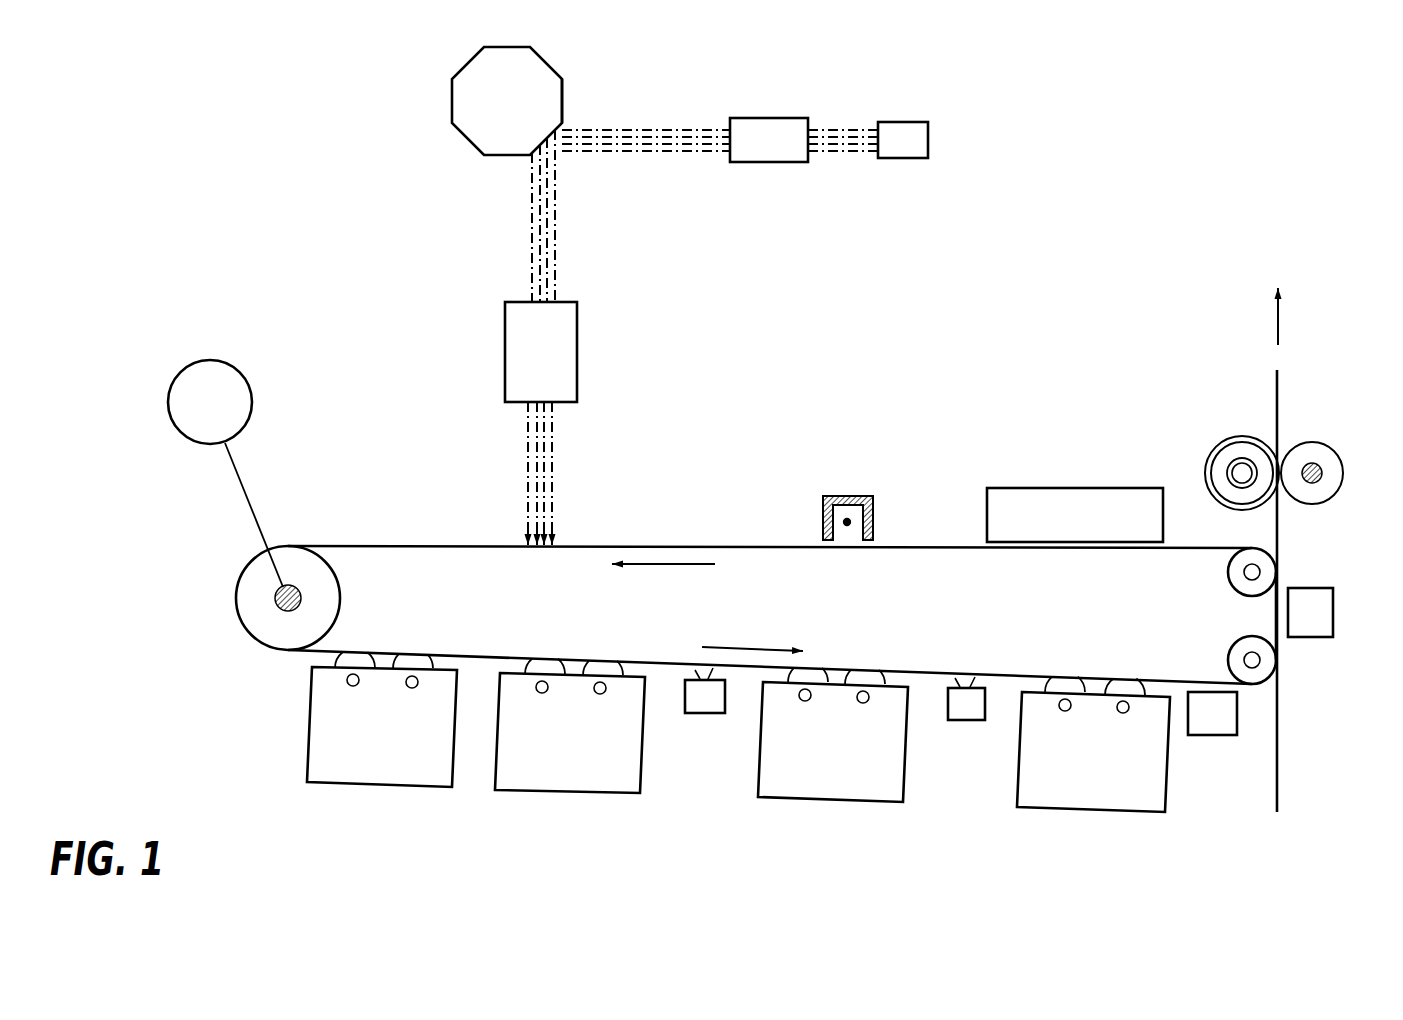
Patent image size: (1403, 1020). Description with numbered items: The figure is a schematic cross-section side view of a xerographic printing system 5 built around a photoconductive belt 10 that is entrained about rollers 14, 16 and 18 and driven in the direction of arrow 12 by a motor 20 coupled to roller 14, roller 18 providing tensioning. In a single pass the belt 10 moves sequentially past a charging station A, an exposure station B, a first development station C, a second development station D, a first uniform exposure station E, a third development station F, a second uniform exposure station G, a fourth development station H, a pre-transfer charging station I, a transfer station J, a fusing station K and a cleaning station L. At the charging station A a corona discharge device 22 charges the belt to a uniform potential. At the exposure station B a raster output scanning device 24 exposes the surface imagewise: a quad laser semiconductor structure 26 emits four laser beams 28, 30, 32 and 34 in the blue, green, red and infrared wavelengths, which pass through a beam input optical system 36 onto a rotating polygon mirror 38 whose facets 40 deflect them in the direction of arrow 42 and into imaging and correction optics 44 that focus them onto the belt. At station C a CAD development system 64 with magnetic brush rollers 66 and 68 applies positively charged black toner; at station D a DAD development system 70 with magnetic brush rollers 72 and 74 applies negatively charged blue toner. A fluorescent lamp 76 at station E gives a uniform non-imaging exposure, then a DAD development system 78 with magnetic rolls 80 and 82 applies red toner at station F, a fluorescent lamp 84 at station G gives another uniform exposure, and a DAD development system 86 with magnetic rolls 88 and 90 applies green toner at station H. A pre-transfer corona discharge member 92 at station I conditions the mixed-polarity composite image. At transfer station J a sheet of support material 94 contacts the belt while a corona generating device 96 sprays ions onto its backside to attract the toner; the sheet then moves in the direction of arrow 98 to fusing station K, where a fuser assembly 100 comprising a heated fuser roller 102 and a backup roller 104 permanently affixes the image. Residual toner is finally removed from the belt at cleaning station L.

The xerographic printing system 5 is at (245, 226).
The photoconductive belt 10 is at (487, 650).
The arrow 12 is at (673, 568).
The roller 14 is at (305, 558).
The roller 16 is at (1240, 655).
The roller 18 is at (1230, 575).
The motor 20 is at (212, 375).
The corona discharge device 22 is at (865, 497).
The raster output scanning device 24 is at (933, 88).
The quad laser semiconductor structure 26 is at (912, 138).
The laser beam 28 is at (836, 167).
The laser beam 30 is at (871, 192).
The laser beam 32 is at (843, 176).
The laser beam 34 is at (847, 180).
The beam input optical system 36 is at (762, 130).
The rotating polygon mirror 38 is at (536, 72).
The facets 40 is at (562, 101).
The arrow 42 is at (575, 283).
The imaging and correction optics 44 is at (565, 357).
The CAD development system 64 is at (423, 763).
The magnetic brush roller 66 is at (362, 652).
The magnetic brush roller 68 is at (420, 652).
The DAD development system 70 is at (595, 762).
The magnetic brush roller 72 is at (547, 660).
The magnetic brush roller 74 is at (607, 663).
The fluorescent lamp 76 is at (703, 705).
The DAD development system 78 is at (853, 780).
The magnetic roll 80 is at (812, 672).
The magnetic roll 82 is at (870, 675).
The fluorescent lamp 84 is at (973, 720).
The DAD development system 86 is at (1113, 790).
The magnetic roll 88 is at (1070, 685).
The magnetic roll 90 is at (1132, 685).
The pre-transfer corona discharge member 92 is at (1215, 738).
The sheet of support material 94 is at (1282, 378).
The corona generating device 96 is at (1320, 628).
The arrow 98 is at (1282, 325).
The fuser assembly 100 is at (1290, 510).
The heated fuser roller 102 is at (1338, 452).
The backup roller 104 is at (1222, 445).
The charging station A is at (812, 480).
The exposure station B is at (513, 520).
The first development station C is at (358, 803).
The second development station D is at (550, 800).
The first uniform exposure station E is at (688, 752).
The third development station F is at (797, 820).
The second uniform exposure station G is at (945, 752).
The fourth development station H is at (1058, 820).
The pre-transfer charging station I is at (1200, 770).
The transfer station J is at (1350, 600).
The fusing station K is at (1247, 398).
The cleaning station L is at (1053, 472).